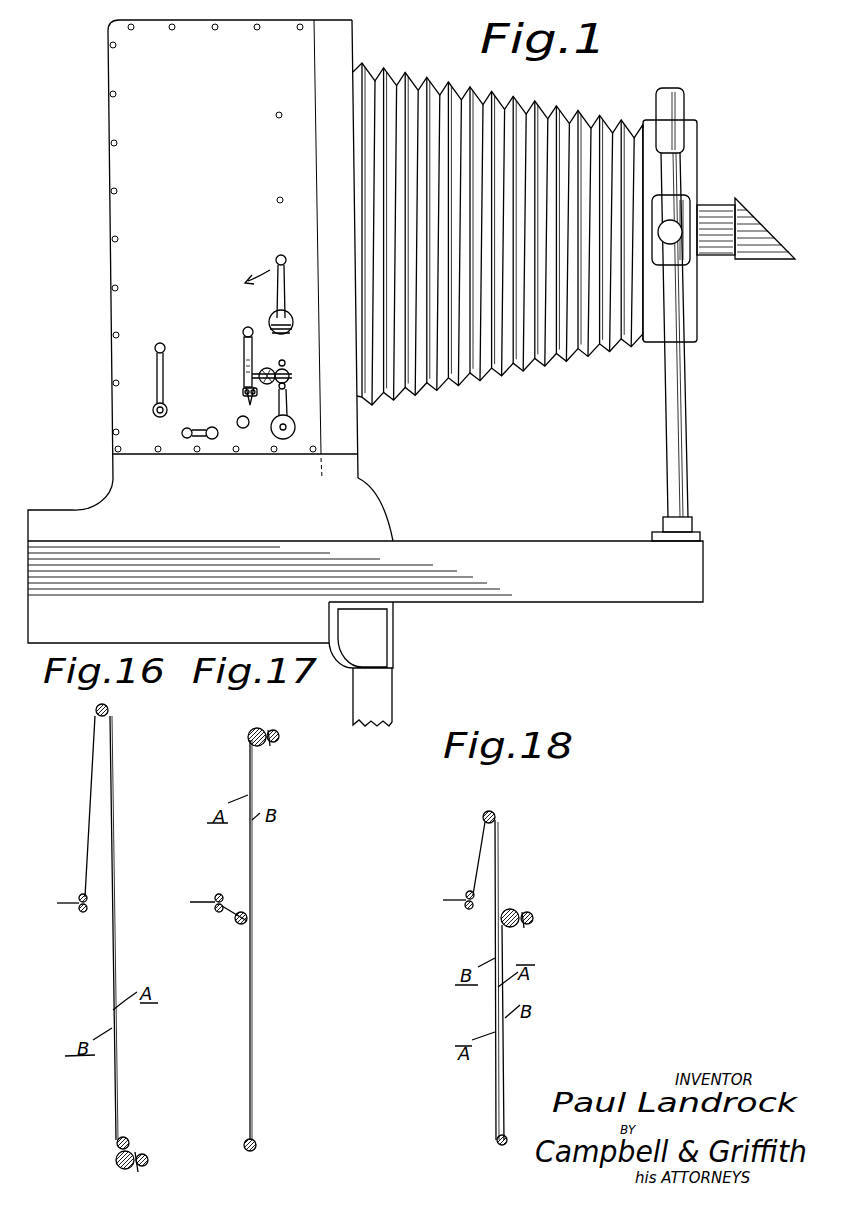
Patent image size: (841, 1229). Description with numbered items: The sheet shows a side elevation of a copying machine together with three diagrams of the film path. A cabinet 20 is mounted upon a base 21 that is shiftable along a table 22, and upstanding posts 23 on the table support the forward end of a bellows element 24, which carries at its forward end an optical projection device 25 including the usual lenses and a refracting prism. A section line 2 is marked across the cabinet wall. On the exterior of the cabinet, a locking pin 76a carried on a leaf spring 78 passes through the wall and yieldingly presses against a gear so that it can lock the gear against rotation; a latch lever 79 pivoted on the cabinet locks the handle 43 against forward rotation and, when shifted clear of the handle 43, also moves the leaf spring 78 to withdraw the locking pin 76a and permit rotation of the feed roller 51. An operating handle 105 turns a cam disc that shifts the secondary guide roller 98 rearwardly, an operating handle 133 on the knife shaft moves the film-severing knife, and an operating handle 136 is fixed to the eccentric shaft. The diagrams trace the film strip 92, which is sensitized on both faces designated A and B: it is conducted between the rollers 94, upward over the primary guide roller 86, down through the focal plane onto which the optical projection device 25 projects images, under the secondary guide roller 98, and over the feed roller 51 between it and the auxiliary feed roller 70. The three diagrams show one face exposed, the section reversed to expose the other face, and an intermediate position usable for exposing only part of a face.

In FIG. 1, the section line 2- 2 is at (316, 252).
In FIG. 1, the cabinet 20 is at (132, 298).
In FIG. 1, the base 21 is at (368, 502).
In FIG. 1, the table 22 is at (527, 541).
In FIG. 1, the upstanding posts 23 is at (684, 382).
In FIG. 1, the bellows element 24 is at (600, 352).
In FIG. 1, the optical projection device 25 is at (714, 210).
In FIG. 1, the handle 43 is at (287, 407).
In FIG. 1, the locking pin 76a is at (243, 395).
In FIG. 1, the leaf spring 78 is at (245, 345).
In FIG. 1, the latch lever 79 is at (285, 373).
In FIG. 1, the operating handle 105 is at (279, 289).
In FIG. 1, the operating handle 133 is at (158, 382).
In FIG. 1, the operating handle 136 is at (182, 433).
In FIG. 16, the feed roller 51 is at (121, 1168).
In FIG. 17, the feed roller 51 is at (258, 731).
In FIG. 18, the feed roller 51 is at (512, 918).
In FIG. 16, the auxiliary feed roller 70 is at (148, 1158).
In FIG. 17, the auxiliary feed roller 70 is at (278, 733).
In FIG. 18, the auxiliary feed roller 70 is at (533, 915).
In FIG. 16, the primary guide roller 86 is at (108, 722).
In FIG. 17, the primary guide roller 86 is at (238, 927).
In FIG. 18, the primary guide roller 86 is at (495, 812).
In FIG. 16, the film strip 92 is at (113, 855).
In FIG. 17, the film strip 92 is at (253, 1060).
In FIG. 18, the film strip 92 is at (505, 1058).
In FIG. 16, the rollers 94 is at (80, 898).
In FIG. 17, the rollers 94 is at (213, 908).
In FIG. 18, the rollers 94 is at (468, 907).
In FIG. 16, the secondary guide roller 98 is at (127, 1137).
In FIG. 17, the secondary guide roller 98 is at (248, 1159).
In FIG. 18, the secondary guide roller 98 is at (498, 1145).